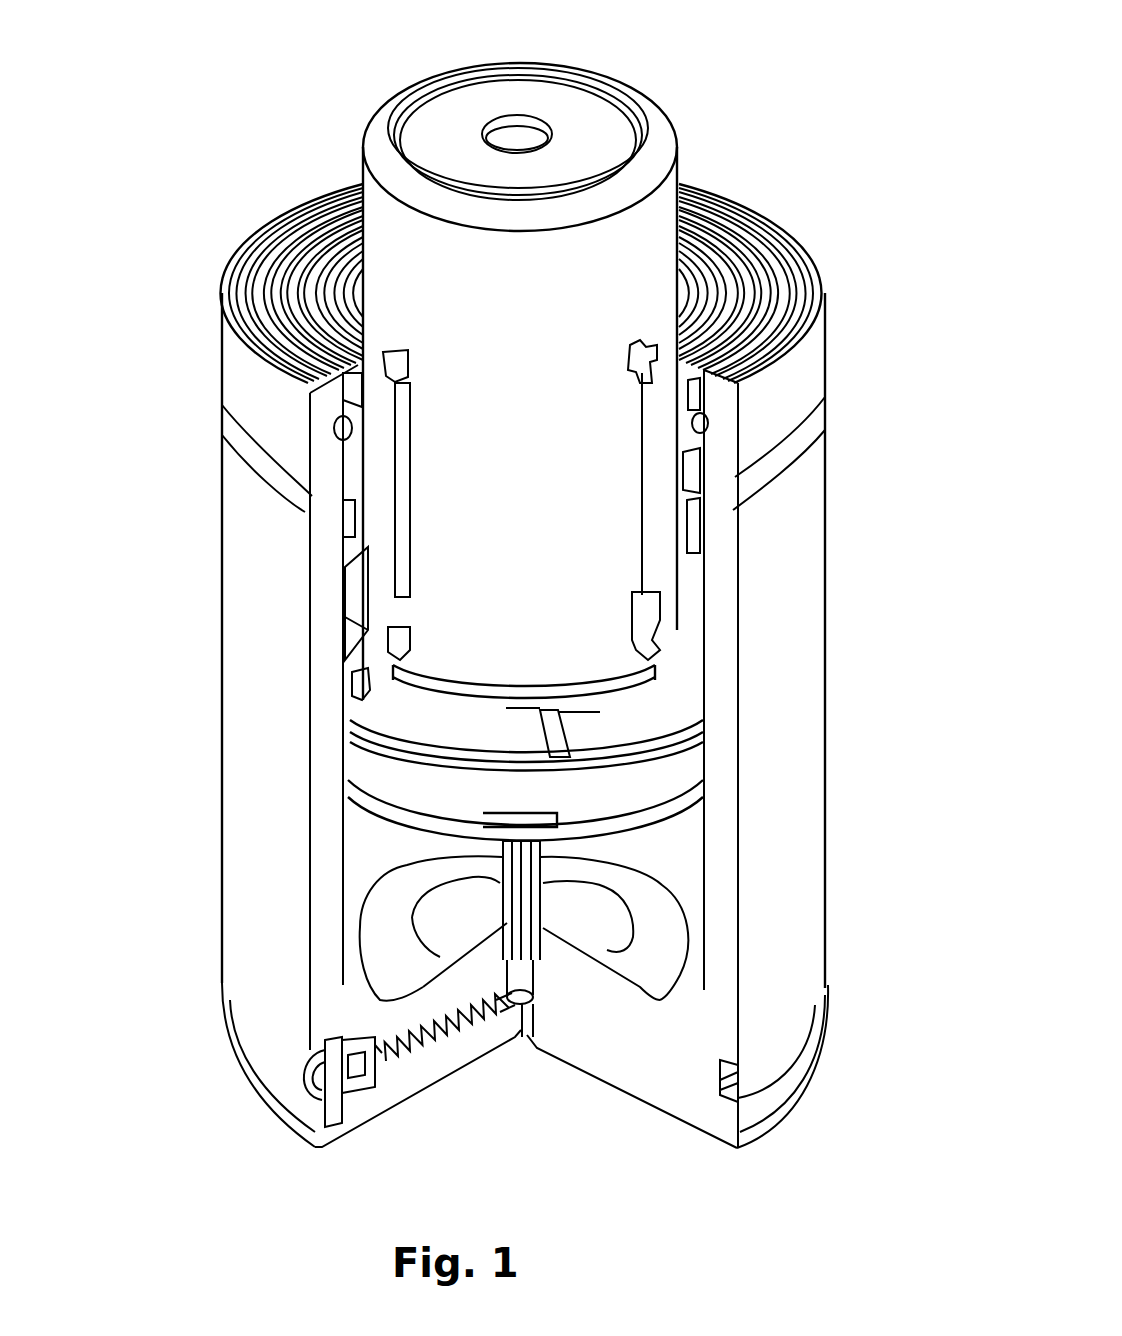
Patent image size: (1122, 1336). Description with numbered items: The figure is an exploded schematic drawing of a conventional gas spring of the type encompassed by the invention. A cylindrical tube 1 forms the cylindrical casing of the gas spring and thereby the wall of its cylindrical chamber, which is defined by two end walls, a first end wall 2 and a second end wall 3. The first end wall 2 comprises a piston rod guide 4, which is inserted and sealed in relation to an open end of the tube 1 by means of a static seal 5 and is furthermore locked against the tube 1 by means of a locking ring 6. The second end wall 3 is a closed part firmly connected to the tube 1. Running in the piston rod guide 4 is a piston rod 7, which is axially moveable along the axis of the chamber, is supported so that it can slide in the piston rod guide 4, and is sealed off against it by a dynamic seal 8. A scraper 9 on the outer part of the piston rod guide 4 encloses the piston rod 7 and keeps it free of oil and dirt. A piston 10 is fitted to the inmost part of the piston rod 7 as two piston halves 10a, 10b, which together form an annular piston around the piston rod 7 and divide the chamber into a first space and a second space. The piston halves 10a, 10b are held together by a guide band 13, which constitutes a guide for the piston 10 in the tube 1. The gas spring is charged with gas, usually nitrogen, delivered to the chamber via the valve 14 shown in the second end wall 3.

The cylindrical tube 1 is at (732, 775).
The first end wall 2 is at (377, 712).
The second end wall 3 is at (385, 995).
The piston rod guide 4 is at (362, 687).
The static seal 5 is at (708, 500).
The locking ring 6 is at (712, 415).
The piston rod 7 is at (630, 265).
The dynamic seal 8 is at (655, 621).
The scraper 9 is at (648, 340).
The piston 10 is at (640, 712).
The piston half 10a is at (488, 742).
The piston half 10b is at (592, 727).
The guide band 13 is at (637, 783).
The valve 14 is at (482, 1022).